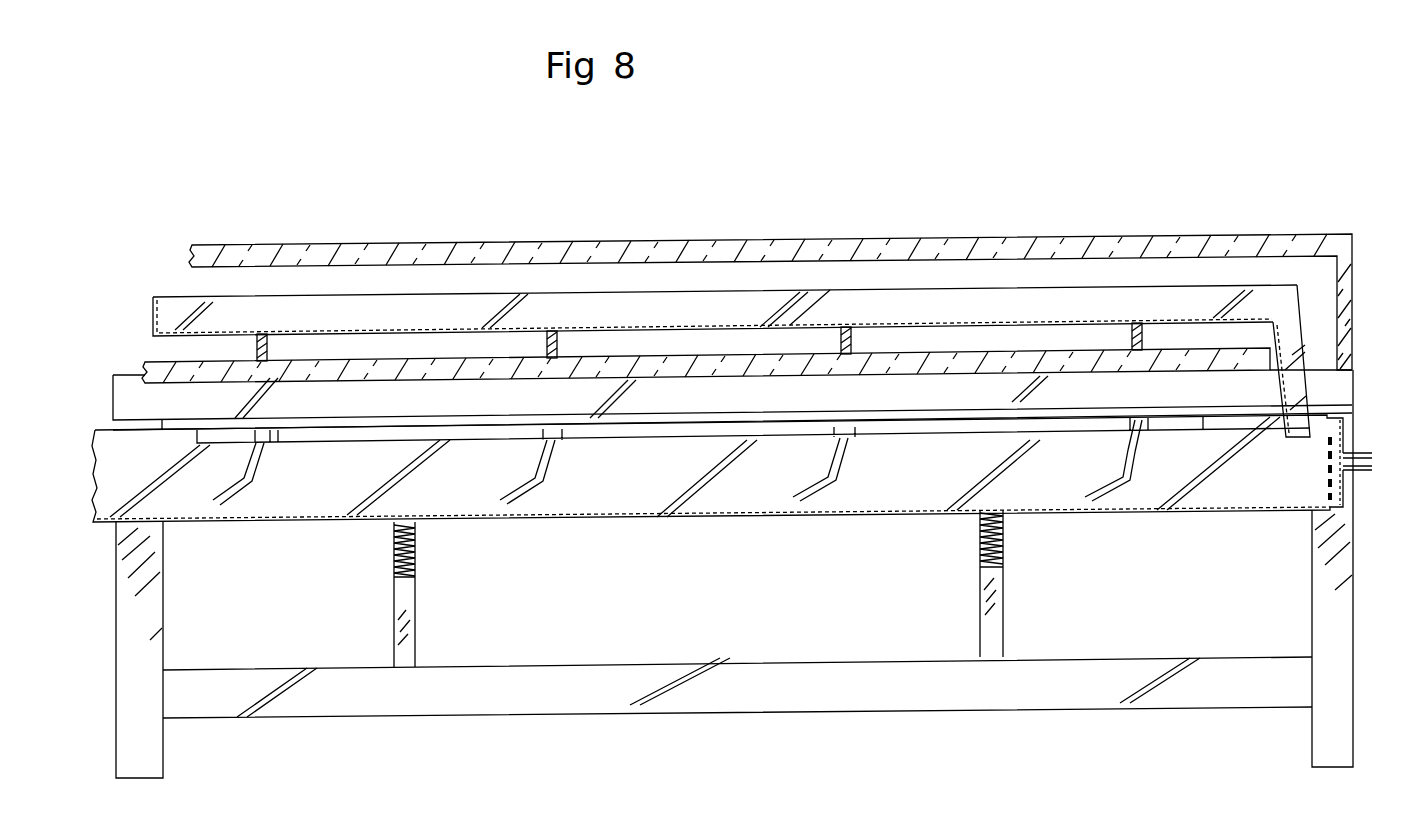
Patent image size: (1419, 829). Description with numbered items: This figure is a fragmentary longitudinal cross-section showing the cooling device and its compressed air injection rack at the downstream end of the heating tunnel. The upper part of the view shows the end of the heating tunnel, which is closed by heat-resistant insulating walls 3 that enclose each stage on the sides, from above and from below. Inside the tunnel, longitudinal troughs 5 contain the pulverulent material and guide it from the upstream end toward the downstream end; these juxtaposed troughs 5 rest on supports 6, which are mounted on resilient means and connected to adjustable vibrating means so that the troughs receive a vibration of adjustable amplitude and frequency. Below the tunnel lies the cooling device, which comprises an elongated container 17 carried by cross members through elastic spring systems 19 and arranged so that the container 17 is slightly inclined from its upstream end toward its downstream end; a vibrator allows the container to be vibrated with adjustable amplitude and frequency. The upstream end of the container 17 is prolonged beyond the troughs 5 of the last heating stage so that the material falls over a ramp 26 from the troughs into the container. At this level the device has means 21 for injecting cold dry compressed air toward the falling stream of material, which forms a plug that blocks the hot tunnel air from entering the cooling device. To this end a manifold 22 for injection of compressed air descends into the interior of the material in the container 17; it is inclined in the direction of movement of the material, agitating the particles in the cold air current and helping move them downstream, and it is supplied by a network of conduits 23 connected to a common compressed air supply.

The insulating wall 3 is at (686, 240).
The longitudinal trough 5 is at (903, 298).
The support 6 is at (566, 331).
The container 17 is at (1228, 511).
The spring system 19 is at (978, 545).
The means for injection of cold dry compressed air 21 is at (1360, 473).
The manifold 22 is at (1116, 472).
The conduit 23 is at (1140, 425).
The ramp 26 is at (1285, 342).